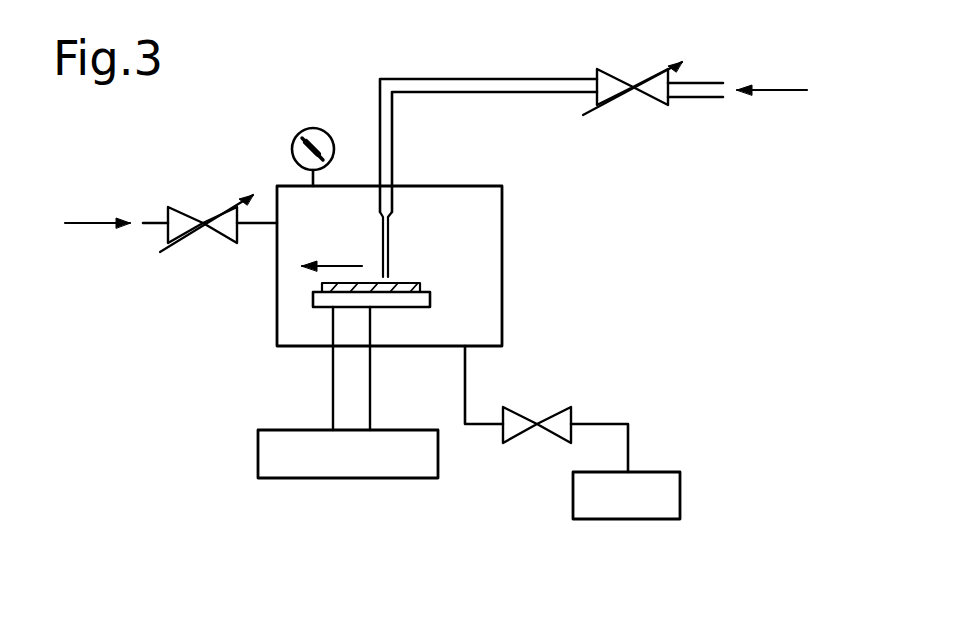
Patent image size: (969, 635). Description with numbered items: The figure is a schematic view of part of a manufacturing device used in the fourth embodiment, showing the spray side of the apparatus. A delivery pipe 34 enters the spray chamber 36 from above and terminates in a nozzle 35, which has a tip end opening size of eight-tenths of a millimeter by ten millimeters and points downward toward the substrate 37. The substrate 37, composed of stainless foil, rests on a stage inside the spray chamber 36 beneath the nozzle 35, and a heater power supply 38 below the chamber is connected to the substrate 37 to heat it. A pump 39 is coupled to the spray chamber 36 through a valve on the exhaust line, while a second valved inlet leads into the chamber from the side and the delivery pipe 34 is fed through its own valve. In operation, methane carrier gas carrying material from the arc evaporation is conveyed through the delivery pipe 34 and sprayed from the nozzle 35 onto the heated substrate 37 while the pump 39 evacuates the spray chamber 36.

The delivery pipe 34 is at (477, 95).
The nozzle 35 is at (390, 243).
The spray chamber 36 is at (278, 297).
The substrate 37 is at (417, 307).
The heater power supply 38 is at (280, 437).
The pump 39 is at (672, 483).